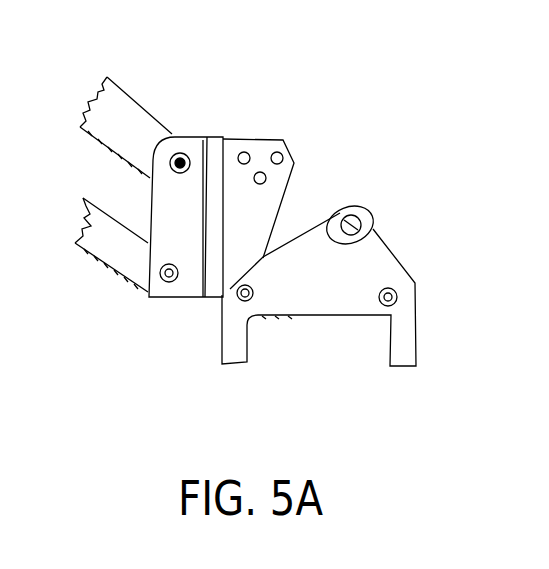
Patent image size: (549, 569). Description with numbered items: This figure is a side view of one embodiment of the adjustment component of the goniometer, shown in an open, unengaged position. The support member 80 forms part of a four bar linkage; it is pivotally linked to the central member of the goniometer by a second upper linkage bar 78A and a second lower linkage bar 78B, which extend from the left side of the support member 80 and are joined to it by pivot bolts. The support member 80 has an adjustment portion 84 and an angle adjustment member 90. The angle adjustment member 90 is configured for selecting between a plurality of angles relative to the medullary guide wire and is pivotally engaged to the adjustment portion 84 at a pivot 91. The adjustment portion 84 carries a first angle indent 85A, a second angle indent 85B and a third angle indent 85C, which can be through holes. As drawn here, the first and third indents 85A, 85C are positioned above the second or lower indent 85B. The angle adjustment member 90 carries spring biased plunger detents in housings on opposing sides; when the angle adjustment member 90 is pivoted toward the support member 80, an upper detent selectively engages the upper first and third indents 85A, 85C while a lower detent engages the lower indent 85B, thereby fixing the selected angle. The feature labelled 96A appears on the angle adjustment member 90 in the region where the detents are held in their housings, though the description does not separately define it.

The second upper linkage bar 78A is at (112, 103).
The second lower linkage bar 78B is at (107, 250).
The support member 80 is at (178, 138).
The adjustment portion 84 is at (234, 140).
The first angle indent 85A is at (247, 152).
The second angle indent 85B is at (267, 183).
The third angle indent 85C is at (283, 143).
The angle adjustment member 90 is at (383, 279).
The pivot 91 is at (223, 296).
The boss 96A is at (373, 215).